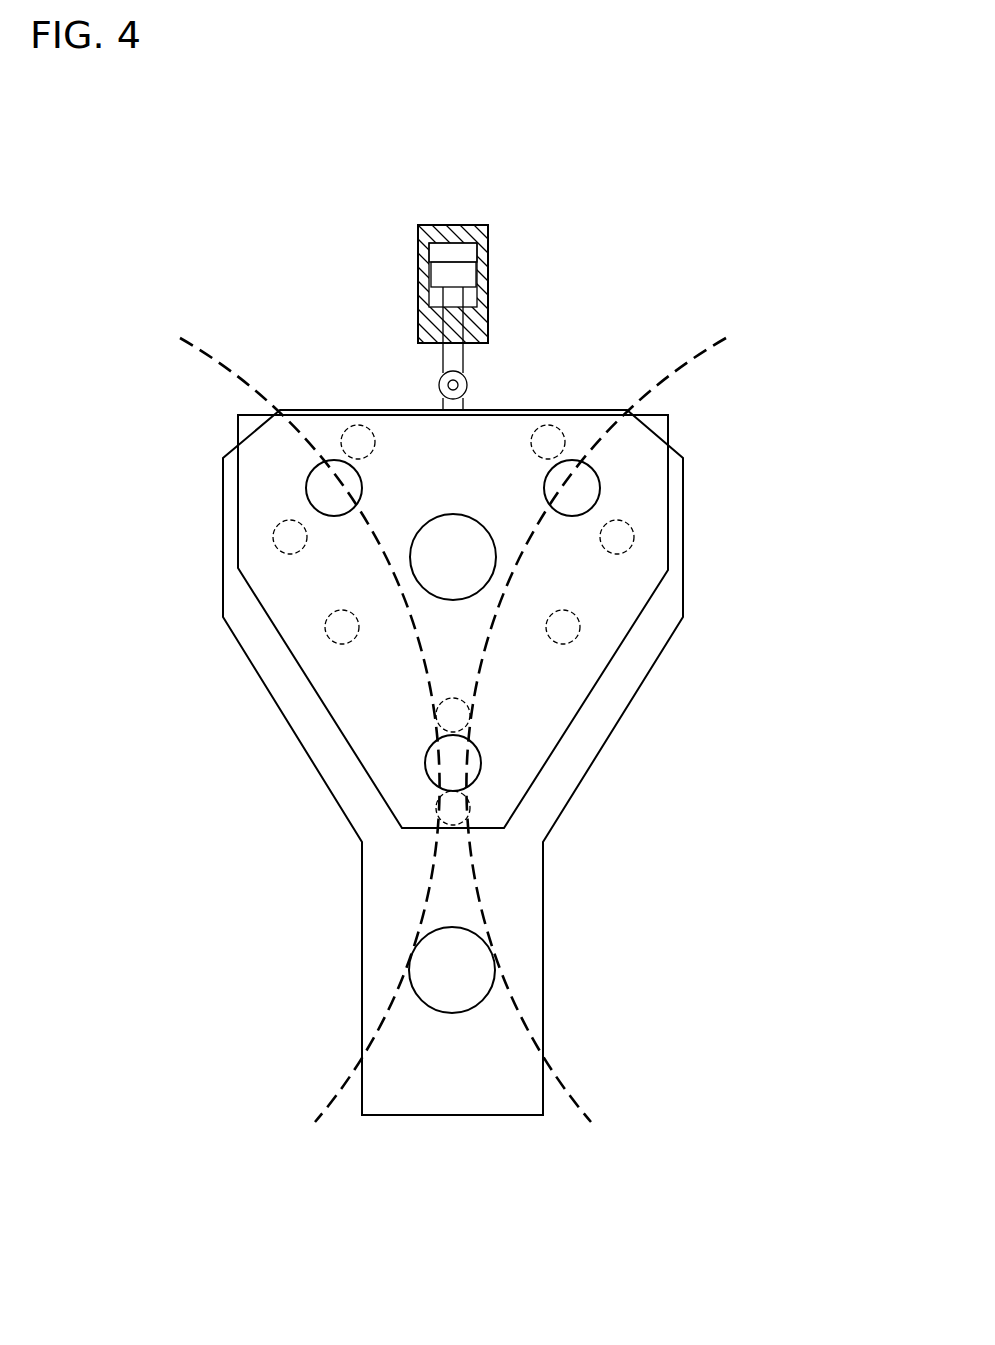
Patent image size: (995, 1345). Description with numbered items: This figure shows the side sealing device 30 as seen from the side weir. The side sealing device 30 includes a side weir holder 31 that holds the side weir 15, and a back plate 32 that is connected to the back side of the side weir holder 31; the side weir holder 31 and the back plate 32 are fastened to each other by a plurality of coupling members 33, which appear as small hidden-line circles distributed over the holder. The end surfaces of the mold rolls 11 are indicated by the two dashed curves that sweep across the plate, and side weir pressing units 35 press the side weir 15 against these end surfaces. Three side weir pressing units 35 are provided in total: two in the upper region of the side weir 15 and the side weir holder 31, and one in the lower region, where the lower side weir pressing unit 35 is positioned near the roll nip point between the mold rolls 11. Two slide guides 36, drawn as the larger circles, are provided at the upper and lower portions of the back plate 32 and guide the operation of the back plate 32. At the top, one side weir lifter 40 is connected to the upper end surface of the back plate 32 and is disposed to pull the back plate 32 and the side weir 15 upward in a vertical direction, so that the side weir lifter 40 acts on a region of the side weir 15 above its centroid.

The mold roll 11 is at (222, 360).
The side weir 15 is at (357, 690).
The side sealing device 30 is at (790, 172).
The side weir holder 31 is at (648, 675).
The back plate 32 is at (452, 1095).
The coupling member 33 is at (290, 537).
The side weir pressing unit 35 is at (327, 487).
The slide guide 36 is at (455, 556).
The side weir lifter 40 is at (458, 205).